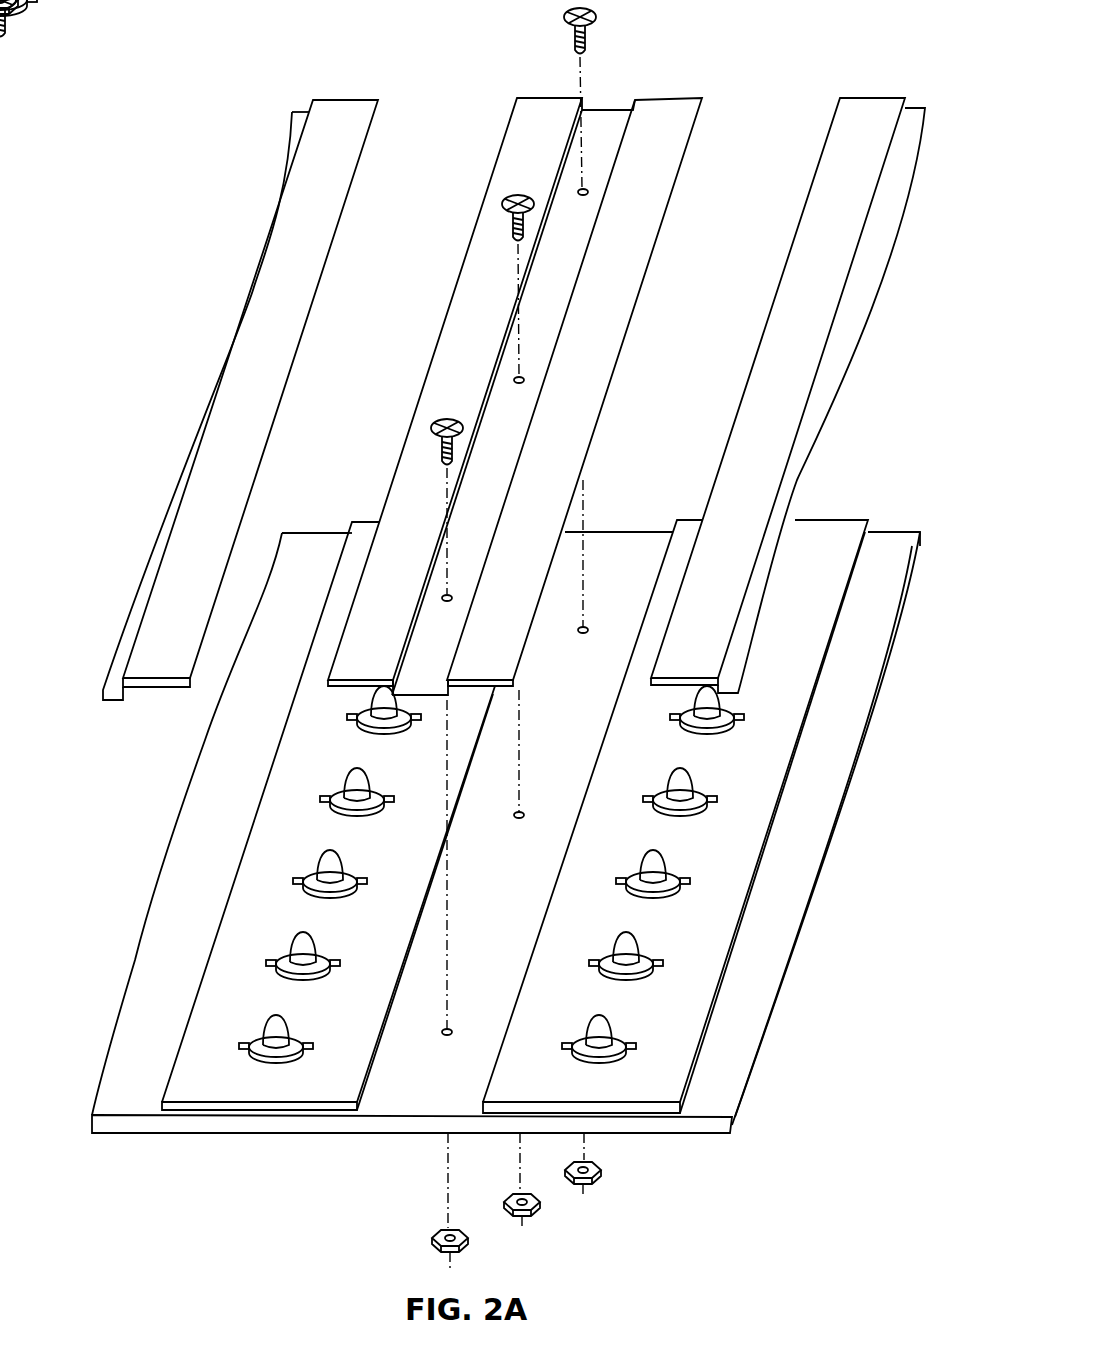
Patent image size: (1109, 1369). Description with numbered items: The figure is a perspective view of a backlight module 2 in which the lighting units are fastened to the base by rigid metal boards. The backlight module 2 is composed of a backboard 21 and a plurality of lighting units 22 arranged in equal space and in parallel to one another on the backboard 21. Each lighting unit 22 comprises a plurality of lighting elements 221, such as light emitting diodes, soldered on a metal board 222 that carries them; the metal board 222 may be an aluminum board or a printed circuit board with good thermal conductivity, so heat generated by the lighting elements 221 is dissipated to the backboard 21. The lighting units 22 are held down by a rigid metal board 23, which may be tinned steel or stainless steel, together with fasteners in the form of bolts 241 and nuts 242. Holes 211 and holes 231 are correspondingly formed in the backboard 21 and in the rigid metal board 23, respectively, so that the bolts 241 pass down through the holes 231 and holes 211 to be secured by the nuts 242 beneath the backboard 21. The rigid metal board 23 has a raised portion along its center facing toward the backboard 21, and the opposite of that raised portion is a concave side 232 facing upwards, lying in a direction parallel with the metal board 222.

The backlight module 2 is at (138, 828).
The backboard 21 is at (120, 1082).
The holes 211 is at (585, 597).
The lighting unit 22 is at (882, 870).
The lighting element 221 is at (654, 856).
The metal board 222 is at (702, 912).
The rigid metal board 23 is at (344, 117).
The holes 231 is at (588, 190).
The concave side 232 is at (597, 100).
The bolts 241 is at (564, 17).
The nuts 242 is at (600, 1172).